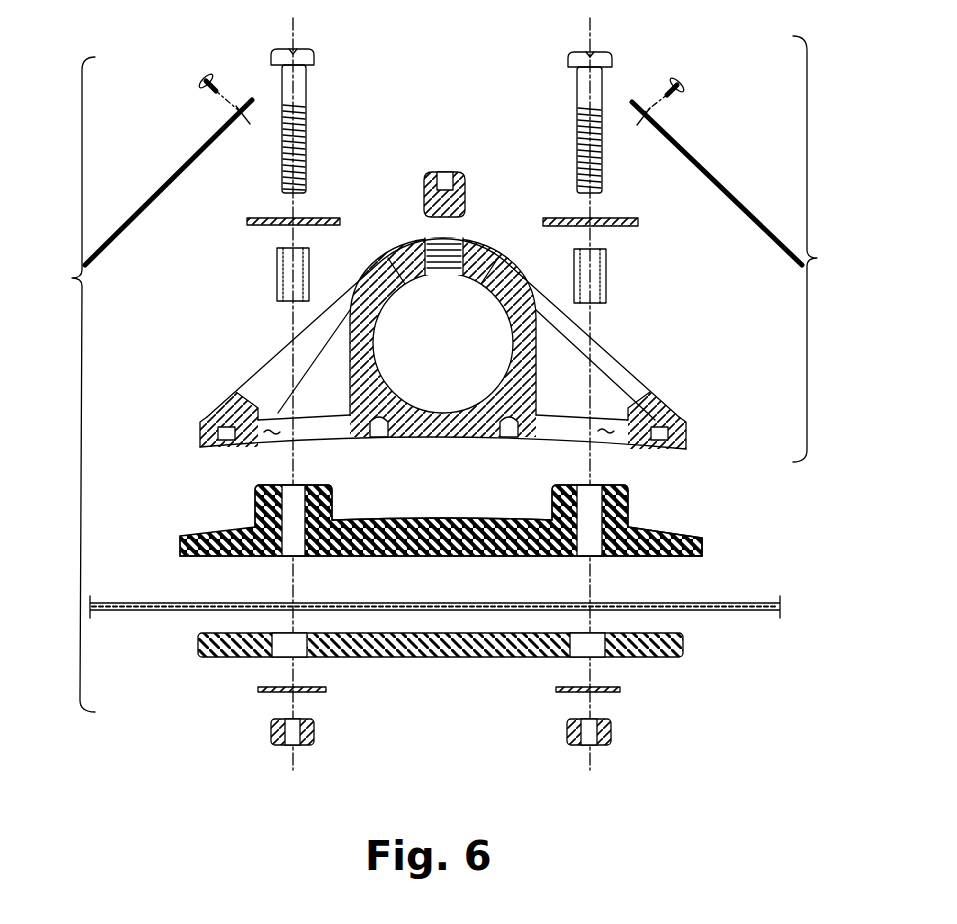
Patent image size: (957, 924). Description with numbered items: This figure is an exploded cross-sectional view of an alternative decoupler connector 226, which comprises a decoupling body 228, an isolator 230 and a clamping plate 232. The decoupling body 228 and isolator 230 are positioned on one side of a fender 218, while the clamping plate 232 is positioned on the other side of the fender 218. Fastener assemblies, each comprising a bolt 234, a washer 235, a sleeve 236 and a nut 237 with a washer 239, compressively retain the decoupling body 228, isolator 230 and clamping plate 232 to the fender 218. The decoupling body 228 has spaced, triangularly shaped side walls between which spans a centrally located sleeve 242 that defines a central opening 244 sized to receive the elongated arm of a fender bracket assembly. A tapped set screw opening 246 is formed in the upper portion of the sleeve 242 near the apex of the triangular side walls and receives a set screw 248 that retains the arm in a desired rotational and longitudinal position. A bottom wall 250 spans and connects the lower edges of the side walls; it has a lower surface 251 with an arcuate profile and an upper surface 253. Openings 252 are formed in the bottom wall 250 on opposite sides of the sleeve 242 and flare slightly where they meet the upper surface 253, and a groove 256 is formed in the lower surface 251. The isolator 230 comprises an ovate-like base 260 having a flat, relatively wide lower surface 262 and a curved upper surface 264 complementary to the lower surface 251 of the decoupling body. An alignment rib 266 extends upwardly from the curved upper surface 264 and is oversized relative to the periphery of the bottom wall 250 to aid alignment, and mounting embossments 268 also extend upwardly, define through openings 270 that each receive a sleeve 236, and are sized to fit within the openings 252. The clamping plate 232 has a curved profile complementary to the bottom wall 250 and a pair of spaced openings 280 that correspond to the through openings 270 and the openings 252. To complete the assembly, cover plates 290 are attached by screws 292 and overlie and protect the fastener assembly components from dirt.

The fender 218 is at (760, 603).
The alternative decoupler connector 226 is at (61, 384).
The decoupling body 228 is at (627, 370).
The isolator 230 is at (688, 562).
The clamping plate 232 is at (460, 657).
The bolt 234 is at (317, 60).
The washer 235 is at (247, 222).
The sleeve 236 is at (277, 284).
The nut 237 is at (272, 740).
The washer 239 is at (258, 692).
The sleeve 242 is at (525, 334).
The central opening 244 is at (450, 366).
The tapped set screw opening 246 is at (432, 238).
The set screw 248 is at (453, 175).
The bottom wall 250 is at (433, 438).
The lower surface 251 is at (350, 437).
The openings 252 is at (273, 436).
The upper surface 253 is at (278, 415).
The groove 256 is at (205, 425).
The base 260 is at (197, 557).
The lower surface 262 is at (467, 557).
The upper surface 264 is at (476, 519).
The alignment rib 266 is at (185, 536).
The mounting embossments 268 is at (257, 498).
The through openings 270 is at (300, 484).
The spaced openings 280 is at (302, 658).
The cover plates 290 is at (197, 152).
The screws 292 is at (197, 78).